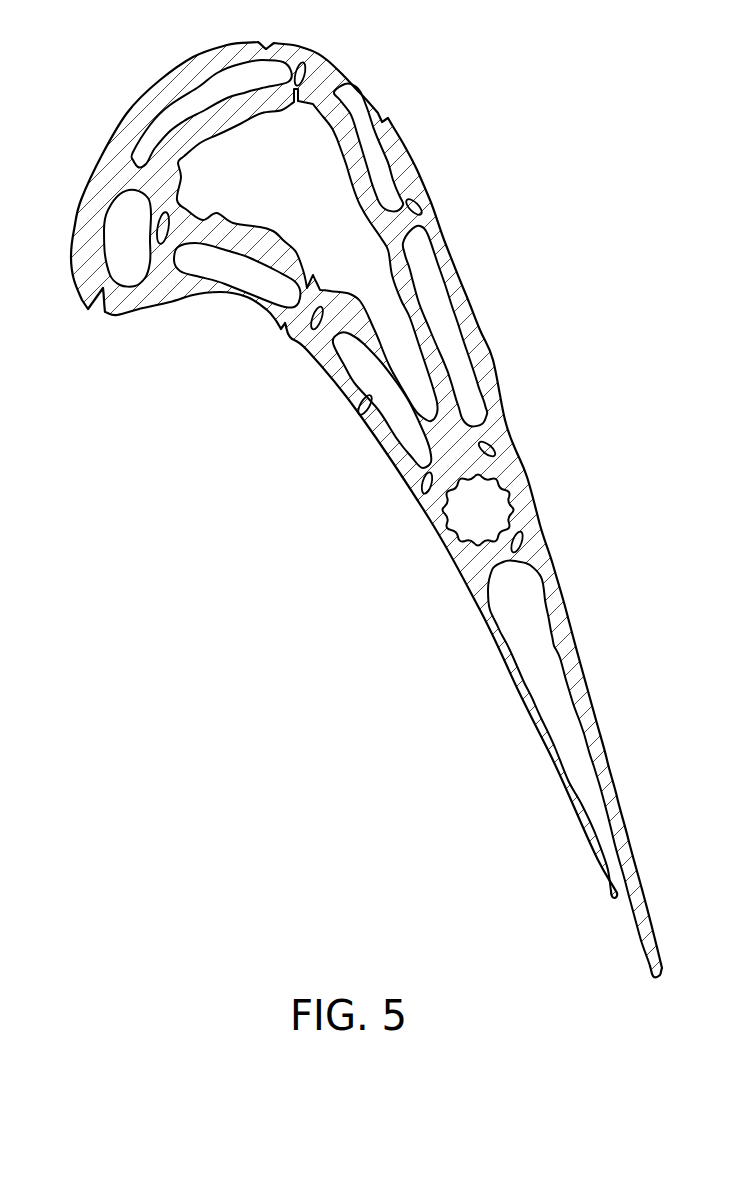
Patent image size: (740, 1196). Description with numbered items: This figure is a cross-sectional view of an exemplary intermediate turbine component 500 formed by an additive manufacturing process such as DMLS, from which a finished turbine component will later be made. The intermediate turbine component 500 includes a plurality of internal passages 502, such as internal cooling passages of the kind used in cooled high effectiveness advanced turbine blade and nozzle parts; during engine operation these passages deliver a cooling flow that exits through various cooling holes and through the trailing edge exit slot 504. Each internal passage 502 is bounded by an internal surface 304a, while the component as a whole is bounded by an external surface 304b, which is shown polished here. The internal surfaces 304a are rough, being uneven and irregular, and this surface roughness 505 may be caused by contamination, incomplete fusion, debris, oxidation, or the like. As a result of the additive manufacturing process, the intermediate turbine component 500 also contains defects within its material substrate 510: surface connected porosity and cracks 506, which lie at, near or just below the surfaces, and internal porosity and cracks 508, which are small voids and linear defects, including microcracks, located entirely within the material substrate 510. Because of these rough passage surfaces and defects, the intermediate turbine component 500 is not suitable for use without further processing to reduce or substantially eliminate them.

The intermediate turbine component 500 is at (508, 168).
The internal surface 304a is at (216, 134).
The external surface 304b is at (178, 68).
The internal passages 502 is at (228, 283).
The trailing edge exit slot 504 is at (619, 899).
The surface roughness 505 is at (266, 223).
The surface connected porosity and cracks 506 is at (312, 86).
The internal porosity and cracks 508 is at (314, 332).
The material substrate 510 is at (446, 528).